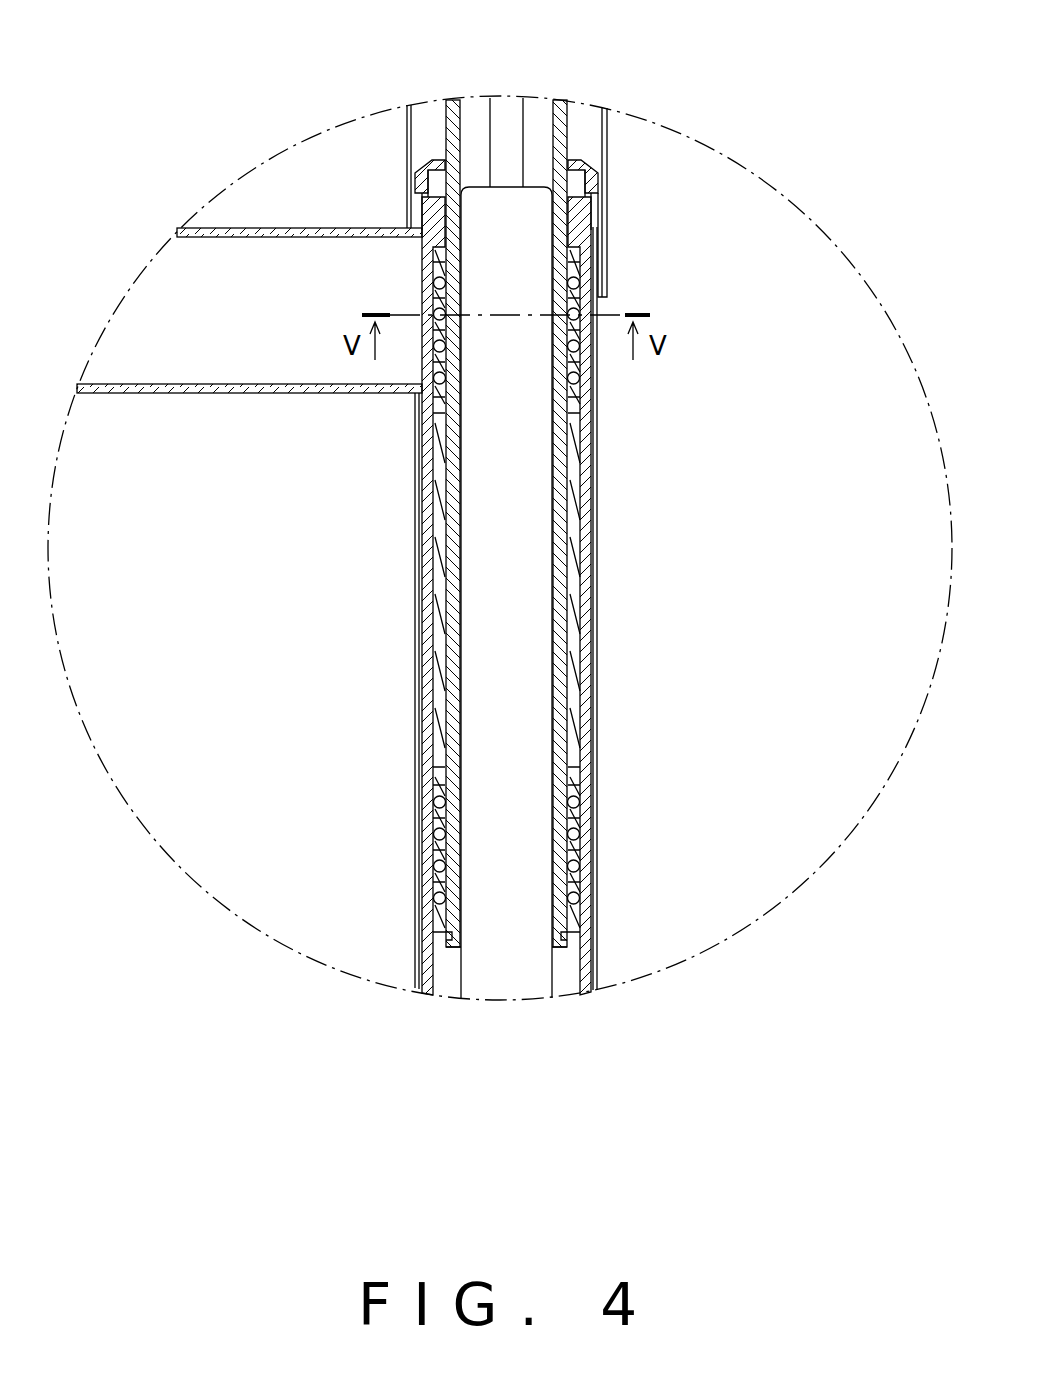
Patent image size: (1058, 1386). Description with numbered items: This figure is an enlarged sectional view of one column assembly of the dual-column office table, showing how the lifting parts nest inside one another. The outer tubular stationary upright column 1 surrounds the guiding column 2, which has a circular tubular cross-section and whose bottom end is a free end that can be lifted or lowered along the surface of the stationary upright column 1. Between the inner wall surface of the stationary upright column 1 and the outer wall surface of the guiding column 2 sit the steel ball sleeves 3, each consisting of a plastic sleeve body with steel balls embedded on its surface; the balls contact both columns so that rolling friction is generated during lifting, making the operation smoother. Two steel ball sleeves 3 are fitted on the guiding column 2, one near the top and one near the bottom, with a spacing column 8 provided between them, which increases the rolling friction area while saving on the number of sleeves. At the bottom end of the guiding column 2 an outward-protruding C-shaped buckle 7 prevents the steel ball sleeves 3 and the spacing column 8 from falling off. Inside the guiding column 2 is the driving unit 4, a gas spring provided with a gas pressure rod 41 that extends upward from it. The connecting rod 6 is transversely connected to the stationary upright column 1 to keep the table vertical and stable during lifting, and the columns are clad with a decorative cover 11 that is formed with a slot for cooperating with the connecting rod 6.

The stationary upright column 1 is at (424, 837).
The guiding column 2 is at (568, 124).
The steel ball sleeve 3 is at (574, 283).
The driving unit 4 is at (500, 718).
The gas pressure rod 41 is at (505, 140).
The connecting rod 6 is at (265, 262).
The C-shaped buckle 7 is at (568, 935).
The spacing column 8 is at (572, 578).
The decorative cover 11 is at (405, 150).